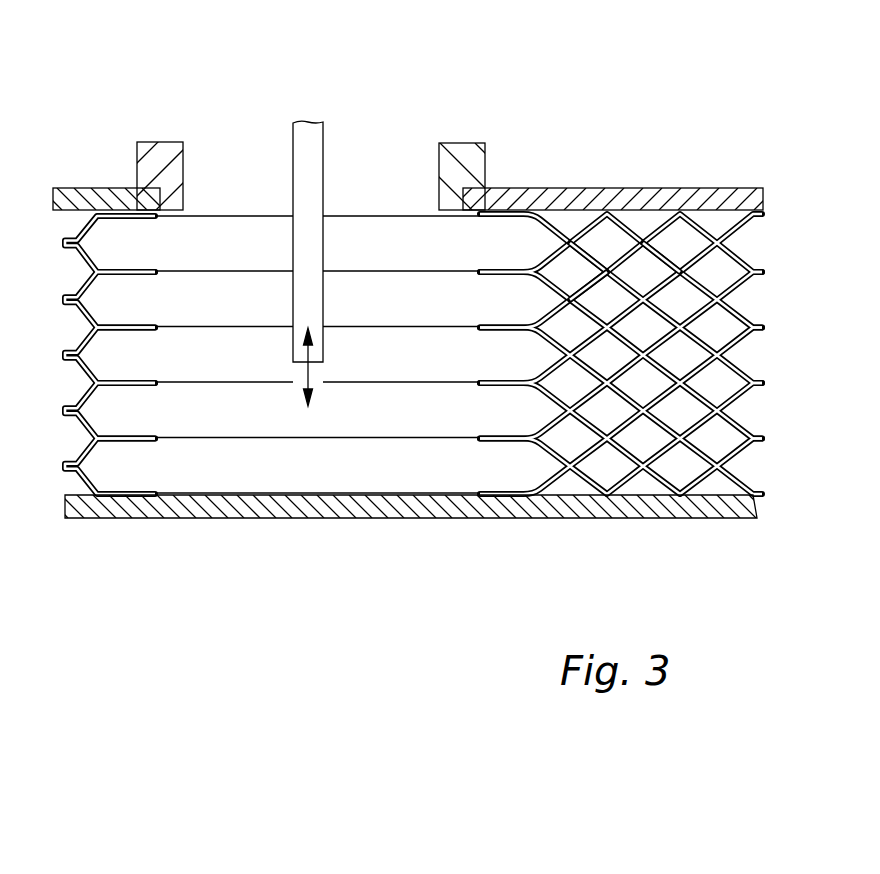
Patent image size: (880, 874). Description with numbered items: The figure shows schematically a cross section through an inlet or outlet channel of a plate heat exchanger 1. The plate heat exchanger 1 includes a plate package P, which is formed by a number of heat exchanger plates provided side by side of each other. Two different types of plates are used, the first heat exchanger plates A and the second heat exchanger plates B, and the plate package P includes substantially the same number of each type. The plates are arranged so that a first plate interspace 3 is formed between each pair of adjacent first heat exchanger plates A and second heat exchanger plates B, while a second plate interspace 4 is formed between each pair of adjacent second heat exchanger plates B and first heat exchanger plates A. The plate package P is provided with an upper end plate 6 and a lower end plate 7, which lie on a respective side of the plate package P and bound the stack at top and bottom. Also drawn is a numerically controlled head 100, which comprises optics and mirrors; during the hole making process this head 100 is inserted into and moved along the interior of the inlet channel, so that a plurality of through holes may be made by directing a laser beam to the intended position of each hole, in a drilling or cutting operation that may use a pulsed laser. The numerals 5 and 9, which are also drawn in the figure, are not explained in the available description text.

The plate heat exchanger 1 is at (260, 152).
The first plate interspace 3 is at (512, 242).
The second plate interspace 4 is at (640, 263).
The intermediate layer 5 is at (400, 475).
The upper end plate 6 is at (753, 200).
The lower end plate 7 is at (723, 508).
The frame 9 is at (240, 192).
The numerically controlled head 100 is at (313, 188).
The first heat exchanger plate A is at (586, 232).
The second heat exchanger plate B is at (589, 252).
The plate package P is at (212, 175).